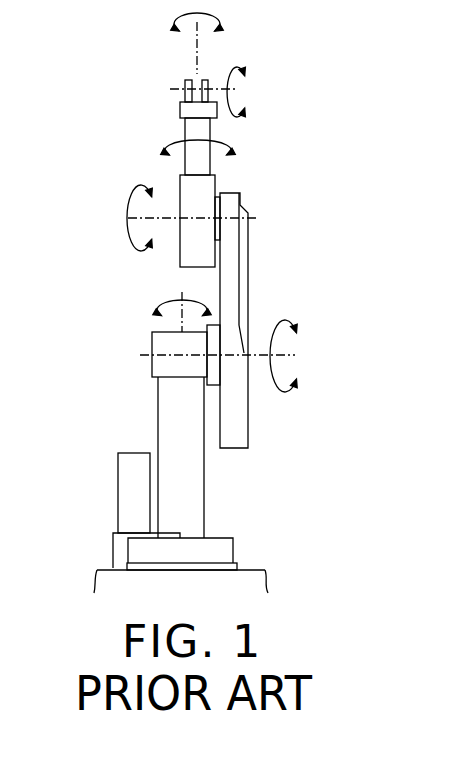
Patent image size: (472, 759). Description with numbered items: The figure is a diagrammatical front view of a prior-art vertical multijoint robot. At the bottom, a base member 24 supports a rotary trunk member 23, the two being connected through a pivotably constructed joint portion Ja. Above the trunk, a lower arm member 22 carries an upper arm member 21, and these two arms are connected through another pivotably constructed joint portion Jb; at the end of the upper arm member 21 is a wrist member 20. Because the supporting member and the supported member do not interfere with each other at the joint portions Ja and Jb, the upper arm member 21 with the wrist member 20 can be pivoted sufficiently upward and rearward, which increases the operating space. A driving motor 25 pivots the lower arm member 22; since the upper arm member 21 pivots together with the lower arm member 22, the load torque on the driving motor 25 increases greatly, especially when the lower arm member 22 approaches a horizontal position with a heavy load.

The wrist member 20 is at (183, 89).
The upper arm member 21 is at (180, 182).
The lower arm member 22 is at (248, 267).
The rotary trunk member 23 is at (197, 467).
The base member 24 is at (218, 547).
The driving motor 25 is at (163, 362).
The joint portion Ja is at (152, 355).
The joint portion Jb is at (167, 220).